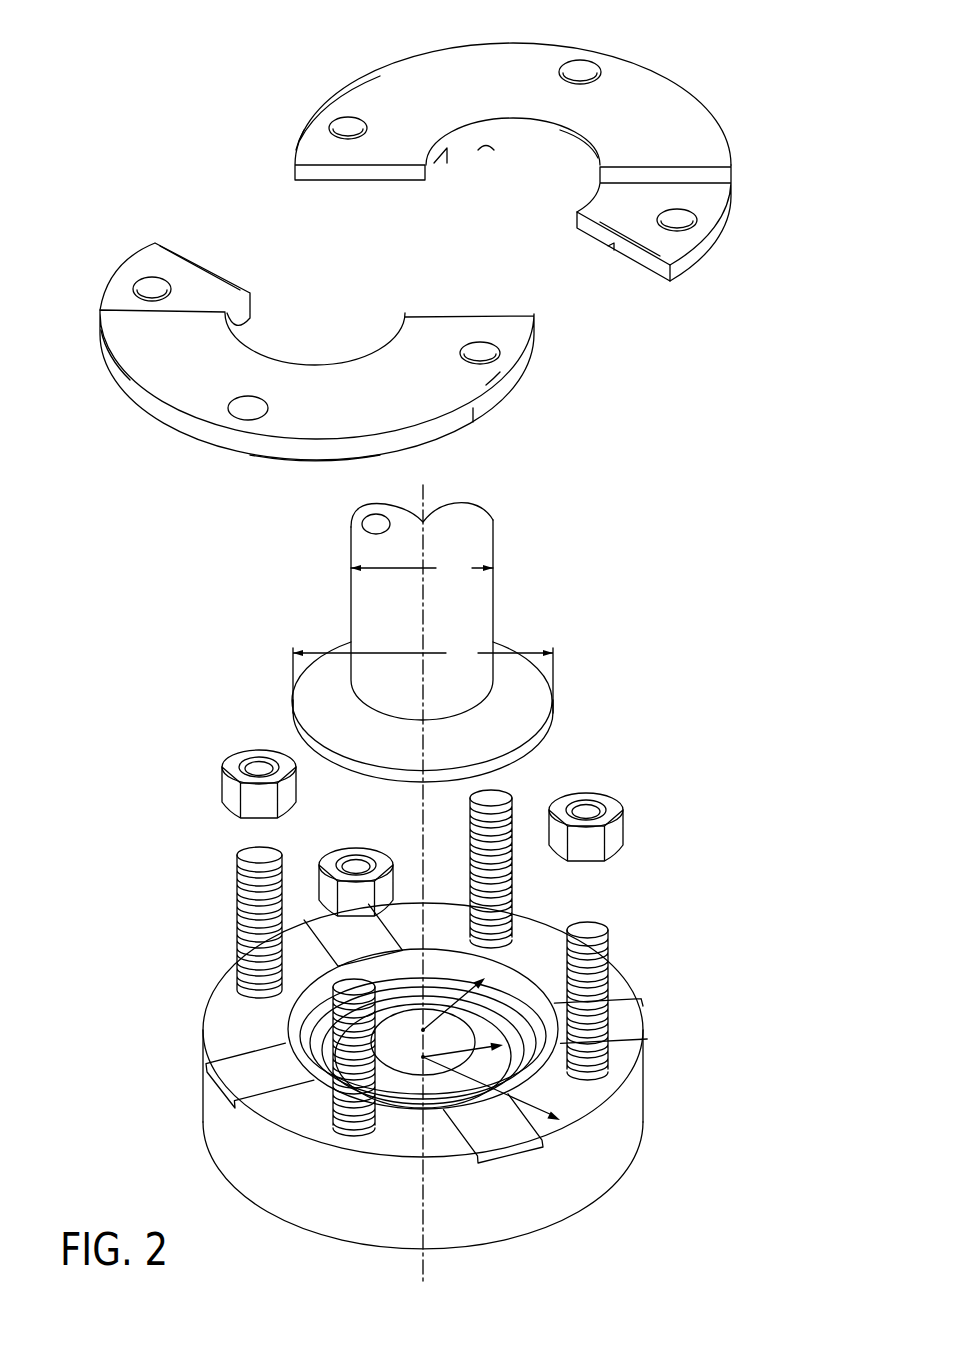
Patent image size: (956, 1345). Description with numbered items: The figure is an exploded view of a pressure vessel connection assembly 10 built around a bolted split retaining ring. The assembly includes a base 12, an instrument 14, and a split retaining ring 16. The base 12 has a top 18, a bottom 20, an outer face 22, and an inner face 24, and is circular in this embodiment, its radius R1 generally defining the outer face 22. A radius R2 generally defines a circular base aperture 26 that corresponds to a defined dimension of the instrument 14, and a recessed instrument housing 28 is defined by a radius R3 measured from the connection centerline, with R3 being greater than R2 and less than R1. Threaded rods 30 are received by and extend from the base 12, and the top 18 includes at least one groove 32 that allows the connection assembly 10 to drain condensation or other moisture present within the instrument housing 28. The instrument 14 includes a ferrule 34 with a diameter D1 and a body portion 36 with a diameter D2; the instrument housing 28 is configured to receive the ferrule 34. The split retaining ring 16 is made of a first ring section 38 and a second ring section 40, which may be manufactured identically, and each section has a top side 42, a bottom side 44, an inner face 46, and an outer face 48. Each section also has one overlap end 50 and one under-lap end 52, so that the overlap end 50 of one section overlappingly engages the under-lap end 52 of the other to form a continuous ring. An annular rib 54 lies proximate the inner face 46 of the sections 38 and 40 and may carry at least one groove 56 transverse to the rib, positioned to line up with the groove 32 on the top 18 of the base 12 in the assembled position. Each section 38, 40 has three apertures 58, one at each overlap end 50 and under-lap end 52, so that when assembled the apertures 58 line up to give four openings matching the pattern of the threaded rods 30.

The pressure vessel connection assembly 10 is at (96, 533).
The base 12 is at (633, 1097).
The instrument 14 is at (497, 546).
The split retaining ring 16 is at (200, 183).
The top 18 is at (535, 937).
The bottom 20 is at (543, 1230).
The outer face 22 is at (287, 1208).
The inner face 24 is at (327, 1047).
The base aperture 26 is at (410, 1093).
The recessed instrument housing 28 is at (448, 964).
The threaded rods 30 is at (237, 888).
The groove 32 is at (223, 1080).
The ferrule 34 is at (522, 715).
The body portion 36 is at (485, 598).
The first ring section 38 is at (170, 395).
The second ring section 40 is at (710, 135).
The top side 42 is at (376, 100).
The bottom side 44 is at (300, 467).
The inner face 46 is at (585, 152).
The outer face 48 is at (112, 373).
The overlap end 50 is at (300, 139).
The under-lap end 52 is at (680, 250).
The annular rib 54 is at (592, 237).
The groove 56 is at (482, 147).
The apertures 58 is at (585, 69).
The ferrule diameter D1 is at (423, 677).
The body diameter D2 is at (422, 569).
The base radius R1 is at (543, 1110).
The aperture radius R2 is at (450, 1068).
The instrument housing radius R3 is at (445, 1062).